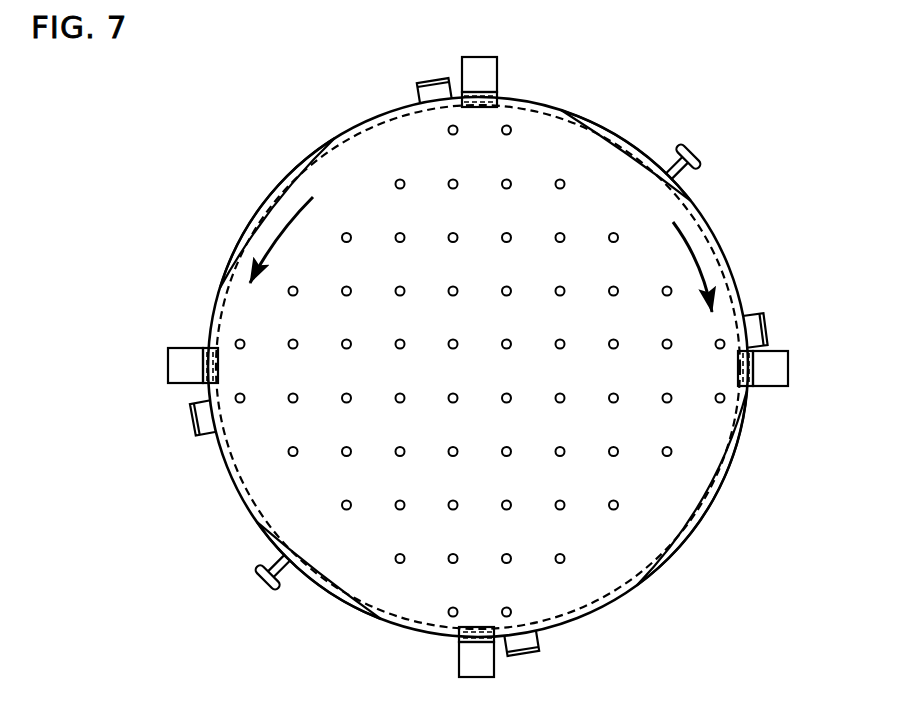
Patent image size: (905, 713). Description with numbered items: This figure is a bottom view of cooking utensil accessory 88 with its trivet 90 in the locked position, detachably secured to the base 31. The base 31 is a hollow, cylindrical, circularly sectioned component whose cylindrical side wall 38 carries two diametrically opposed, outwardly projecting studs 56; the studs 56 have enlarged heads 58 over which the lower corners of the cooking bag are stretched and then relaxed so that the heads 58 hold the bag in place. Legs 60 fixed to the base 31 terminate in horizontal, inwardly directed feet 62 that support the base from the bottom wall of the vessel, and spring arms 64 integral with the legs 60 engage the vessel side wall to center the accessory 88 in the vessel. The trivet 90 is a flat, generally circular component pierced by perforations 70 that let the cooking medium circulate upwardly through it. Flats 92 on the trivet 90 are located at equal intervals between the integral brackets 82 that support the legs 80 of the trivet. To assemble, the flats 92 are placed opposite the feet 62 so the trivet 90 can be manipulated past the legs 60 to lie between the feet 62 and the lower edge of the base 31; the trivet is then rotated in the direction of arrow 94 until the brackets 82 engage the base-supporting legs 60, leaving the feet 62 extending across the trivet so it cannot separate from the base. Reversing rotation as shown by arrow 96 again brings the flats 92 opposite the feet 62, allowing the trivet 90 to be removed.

The base 31 is at (670, 567).
The side wall 38 is at (700, 527).
The studs 56 is at (685, 146).
The enlarged heads 58 is at (693, 168).
The legs 60 is at (500, 95).
The feet 62 is at (482, 637).
The spring arms 64 is at (460, 677).
The perforations 70 is at (559, 392).
The legs 80 is at (192, 417).
The integral brackets 82 is at (208, 430).
The cooking utensil accessory 88 is at (295, 147).
The trivet 90 is at (393, 110).
The flats 92 is at (298, 183).
The arrow 94 is at (698, 260).
The arrow 96 is at (282, 238).